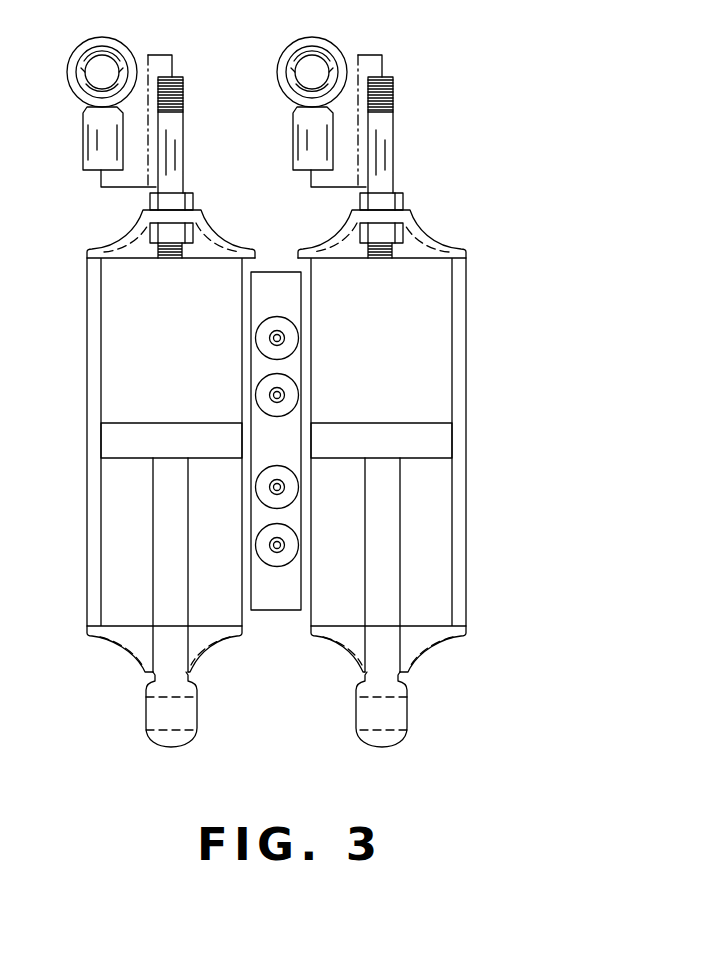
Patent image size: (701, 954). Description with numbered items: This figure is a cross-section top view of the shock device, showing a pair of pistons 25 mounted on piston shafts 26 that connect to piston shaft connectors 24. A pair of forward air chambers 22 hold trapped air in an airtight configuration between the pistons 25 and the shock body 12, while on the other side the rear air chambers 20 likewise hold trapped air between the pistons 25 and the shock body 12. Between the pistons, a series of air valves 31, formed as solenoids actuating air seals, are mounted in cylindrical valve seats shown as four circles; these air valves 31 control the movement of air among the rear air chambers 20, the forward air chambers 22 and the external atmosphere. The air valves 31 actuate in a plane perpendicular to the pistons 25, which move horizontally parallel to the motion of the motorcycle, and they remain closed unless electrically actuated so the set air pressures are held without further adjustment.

The shock body 12 is at (462, 163).
The rear air chambers 20 is at (135, 330).
The forward air chambers 22 is at (340, 590).
The piston shaft connectors 24 is at (146, 731).
The pistons 25 is at (142, 423).
The piston shafts 26 is at (153, 545).
The air valves 31 is at (278, 336).